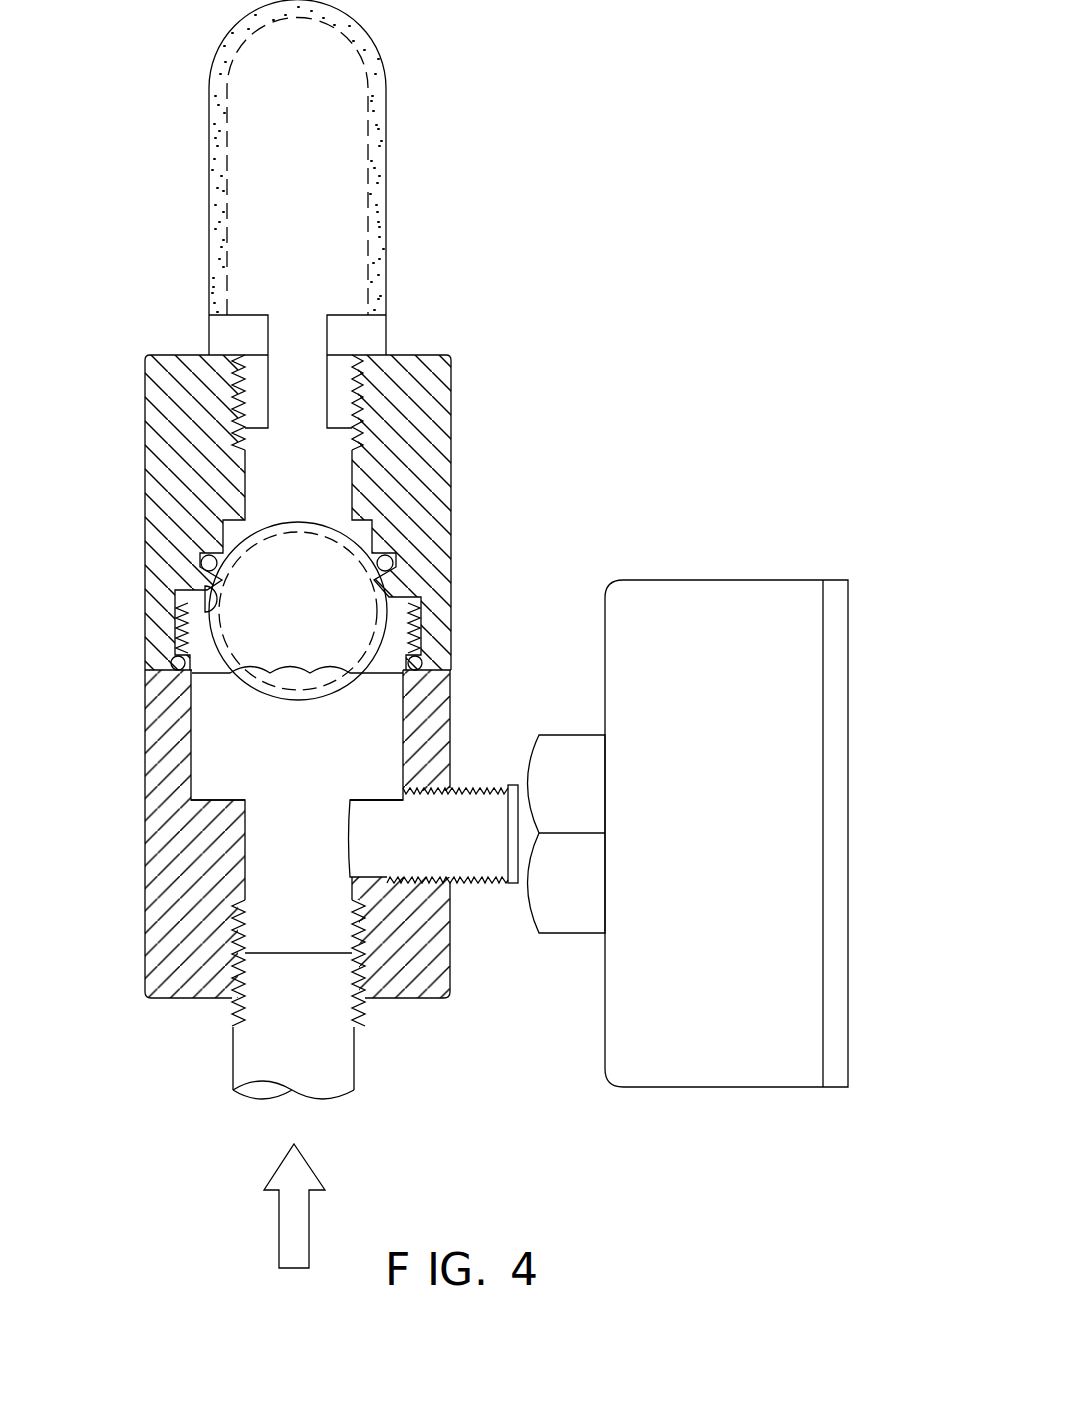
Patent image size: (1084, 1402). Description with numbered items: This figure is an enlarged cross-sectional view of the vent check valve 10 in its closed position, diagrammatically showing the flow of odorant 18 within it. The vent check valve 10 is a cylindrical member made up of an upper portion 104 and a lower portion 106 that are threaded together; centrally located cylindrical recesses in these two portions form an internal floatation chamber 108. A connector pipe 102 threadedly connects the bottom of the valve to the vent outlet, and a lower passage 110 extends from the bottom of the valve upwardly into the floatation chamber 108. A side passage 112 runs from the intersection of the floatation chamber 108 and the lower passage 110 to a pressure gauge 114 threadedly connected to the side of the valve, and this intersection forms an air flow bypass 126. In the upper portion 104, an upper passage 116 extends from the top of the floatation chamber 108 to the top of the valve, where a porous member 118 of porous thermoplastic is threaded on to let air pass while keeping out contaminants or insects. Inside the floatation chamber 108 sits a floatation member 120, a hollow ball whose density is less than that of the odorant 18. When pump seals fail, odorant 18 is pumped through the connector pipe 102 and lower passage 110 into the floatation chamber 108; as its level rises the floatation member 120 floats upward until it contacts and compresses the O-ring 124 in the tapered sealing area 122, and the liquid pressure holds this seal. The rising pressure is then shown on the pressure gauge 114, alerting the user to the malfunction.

The vent check valve 10 is at (525, 395).
The odorant 18 is at (243, 750).
The connector pipe 102 is at (342, 1078).
The upper portion 104 is at (168, 448).
The lower portion 106 is at (167, 983).
The floatation chamber 108 is at (333, 772).
The lower passage 110 is at (283, 930).
The side passage 112 is at (393, 862).
The pressure gauge 114 is at (722, 688).
The upper passage 116 is at (283, 388).
The porous member 118 is at (386, 249).
The floatation member 120 is at (273, 698).
The sealing area 122 is at (210, 610).
The O-ring 124 is at (395, 563).
The air flow bypass 126 is at (387, 800).